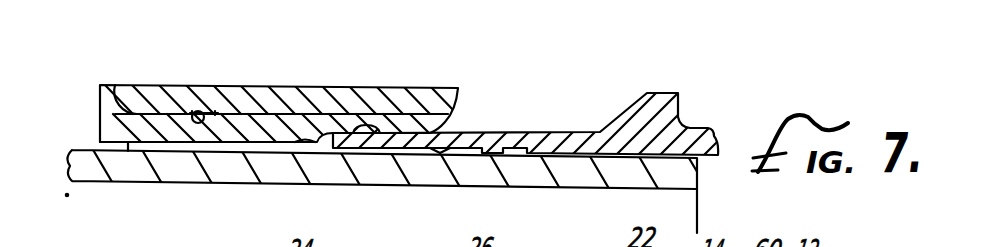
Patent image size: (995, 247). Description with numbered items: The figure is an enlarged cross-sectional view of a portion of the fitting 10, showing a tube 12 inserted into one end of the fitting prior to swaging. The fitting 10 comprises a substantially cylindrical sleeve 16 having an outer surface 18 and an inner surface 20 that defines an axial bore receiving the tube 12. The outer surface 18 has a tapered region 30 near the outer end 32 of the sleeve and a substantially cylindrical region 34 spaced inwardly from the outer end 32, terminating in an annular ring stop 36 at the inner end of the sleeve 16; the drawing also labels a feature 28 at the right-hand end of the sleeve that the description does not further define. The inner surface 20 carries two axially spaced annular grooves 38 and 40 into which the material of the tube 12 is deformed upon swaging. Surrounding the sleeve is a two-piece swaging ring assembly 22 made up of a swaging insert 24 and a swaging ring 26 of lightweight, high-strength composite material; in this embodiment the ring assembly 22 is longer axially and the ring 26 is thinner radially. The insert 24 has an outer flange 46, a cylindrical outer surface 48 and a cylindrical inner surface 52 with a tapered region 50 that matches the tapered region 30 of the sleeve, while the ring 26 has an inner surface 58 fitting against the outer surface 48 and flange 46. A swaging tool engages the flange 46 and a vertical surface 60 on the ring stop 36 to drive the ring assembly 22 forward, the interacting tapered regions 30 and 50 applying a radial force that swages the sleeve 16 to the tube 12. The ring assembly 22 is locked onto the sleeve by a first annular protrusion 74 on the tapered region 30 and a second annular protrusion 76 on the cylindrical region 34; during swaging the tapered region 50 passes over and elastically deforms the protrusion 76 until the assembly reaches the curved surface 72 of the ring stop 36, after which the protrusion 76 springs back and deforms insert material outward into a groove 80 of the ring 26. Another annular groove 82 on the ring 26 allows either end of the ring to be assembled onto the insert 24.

The fitting 10 is at (752, 50).
The tube 12 is at (84, 150).
The sleeve 16 is at (717, 140).
The outer surface 18 is at (498, 132).
The inner surface 20 is at (622, 158).
The swaging ring assembly 22 is at (301, 50).
The swaging insert 24 is at (108, 85).
The swaging ring 26 is at (440, 88).
The lip 28 is at (712, 128).
The tapered region 30 is at (335, 128).
The outer end 32 is at (280, 143).
The cylindrical region 34 is at (587, 130).
The annular ring stop 36 is at (664, 92).
The annular groove 38 is at (465, 152).
The annular groove 40 is at (523, 153).
The flange 46 is at (101, 101).
The cylindrical outer surface 48 is at (252, 113).
The tapered region 50 is at (388, 112).
The cylindrical inner surface 52 is at (128, 143).
The inner surface 58 is at (303, 143).
The vertical surface 60 is at (680, 100).
The curved surface 72 is at (625, 121).
The first annular protrusion 74 is at (372, 130).
The second annular protrusion 76 is at (545, 132).
The groove 80 is at (388, 112).
The annular groove 82 is at (199, 110).